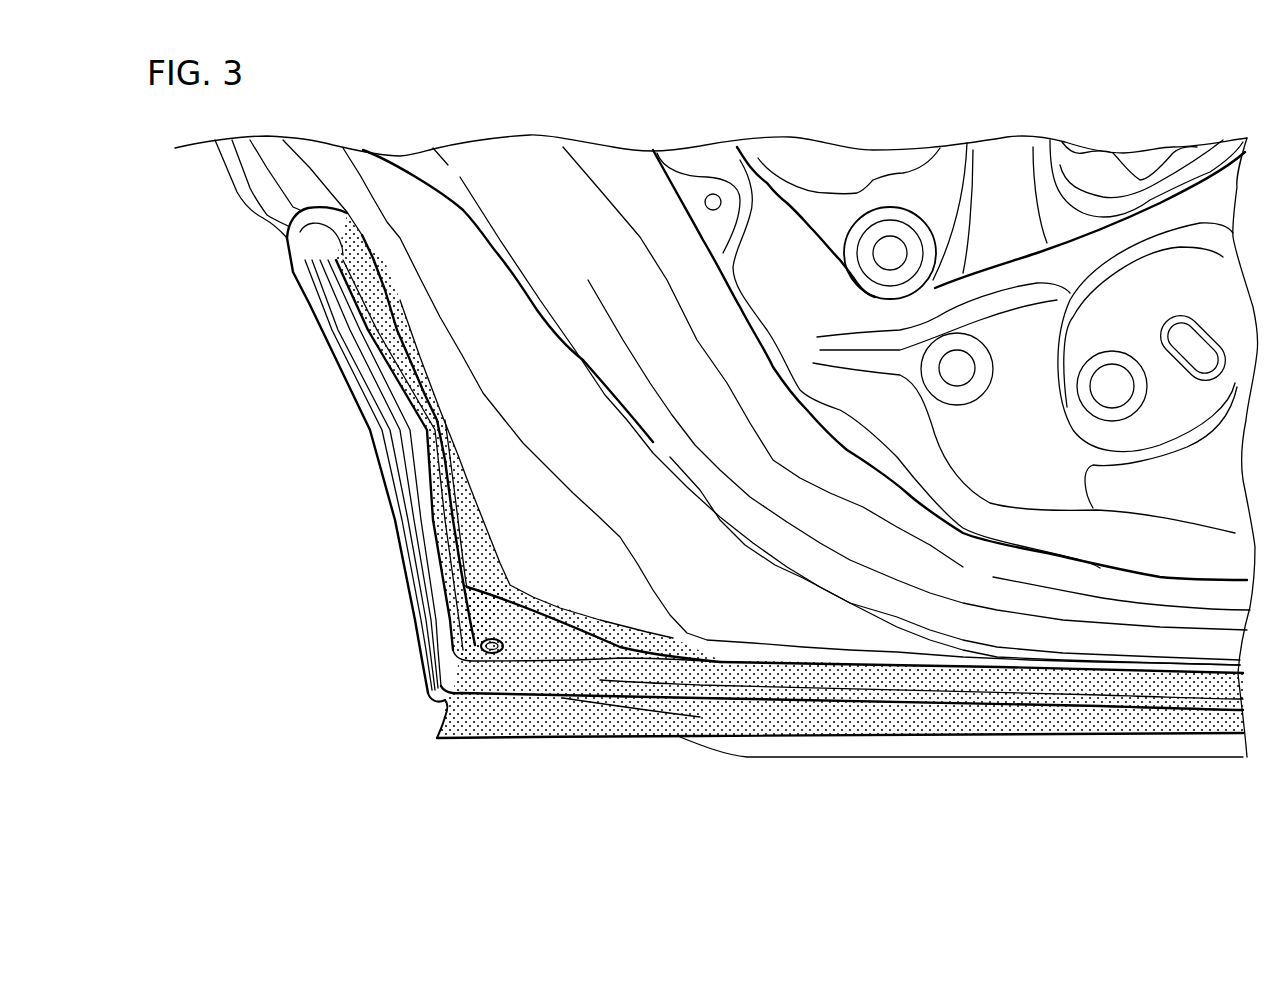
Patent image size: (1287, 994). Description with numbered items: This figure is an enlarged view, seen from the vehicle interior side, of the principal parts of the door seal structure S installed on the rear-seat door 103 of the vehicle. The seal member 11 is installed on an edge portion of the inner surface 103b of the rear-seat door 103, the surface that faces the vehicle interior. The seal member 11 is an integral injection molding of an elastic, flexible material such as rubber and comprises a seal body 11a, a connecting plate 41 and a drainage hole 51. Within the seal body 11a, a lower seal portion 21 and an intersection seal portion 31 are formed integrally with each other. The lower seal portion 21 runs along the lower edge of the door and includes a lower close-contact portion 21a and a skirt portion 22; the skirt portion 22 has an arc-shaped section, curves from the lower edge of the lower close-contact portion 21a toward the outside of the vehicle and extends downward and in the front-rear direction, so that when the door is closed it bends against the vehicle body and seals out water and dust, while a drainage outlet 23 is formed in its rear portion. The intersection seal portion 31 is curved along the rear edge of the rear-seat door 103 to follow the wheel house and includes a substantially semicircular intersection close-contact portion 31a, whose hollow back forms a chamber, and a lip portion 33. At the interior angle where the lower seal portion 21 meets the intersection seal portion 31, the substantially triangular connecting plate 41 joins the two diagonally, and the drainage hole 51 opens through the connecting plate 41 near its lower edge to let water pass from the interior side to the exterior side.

The door seal structure S is at (682, 128).
The rear-seat door 103 is at (545, 181).
The inner surface of the door 103b is at (412, 207).
The intersection seal portion 31 is at (307, 299).
The intersection close-contact portion 31a is at (418, 444).
The lip portion 33 is at (345, 386).
The connecting plate 41 is at (492, 617).
The drainage hole 51 is at (447, 657).
The seal member 11 is at (593, 748).
The seal body 11a is at (418, 683).
The lower seal portion 21 is at (860, 743).
The lower close-contact portion 21a is at (953, 702).
The skirt portion 22 is at (508, 718).
The drainage outlet 23 is at (440, 722).